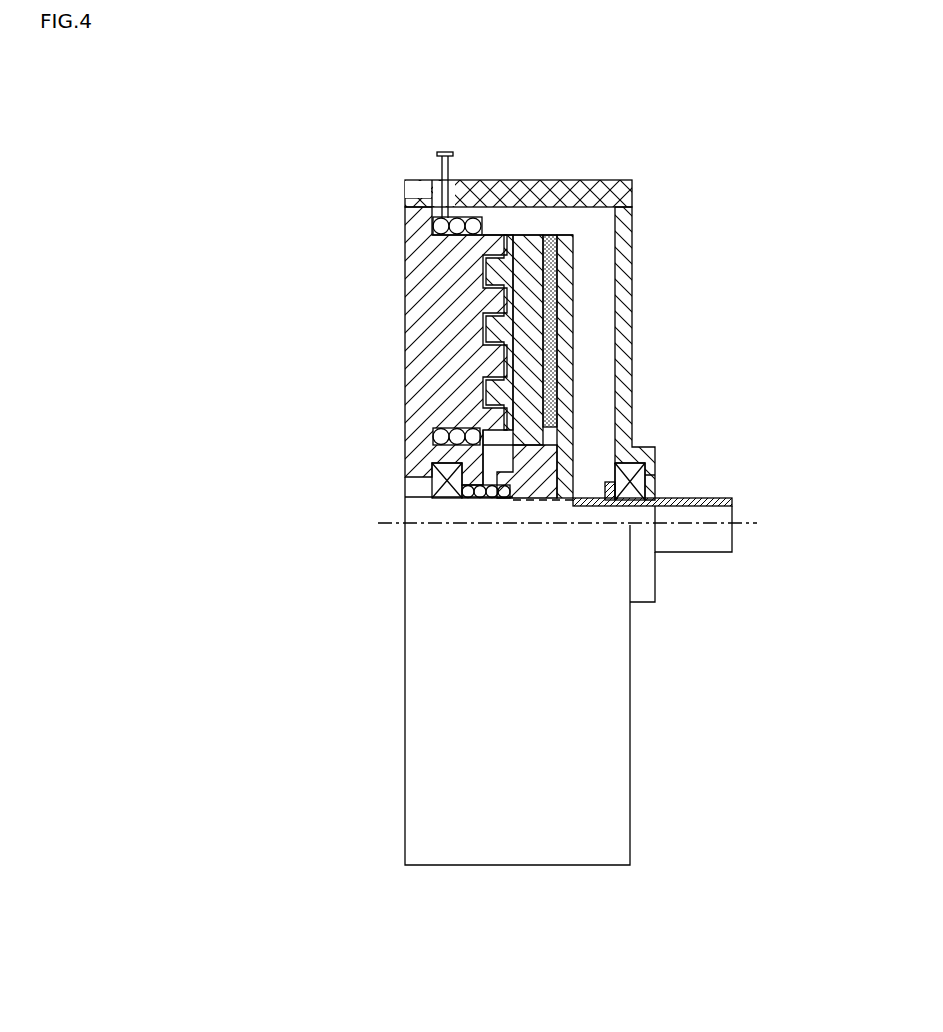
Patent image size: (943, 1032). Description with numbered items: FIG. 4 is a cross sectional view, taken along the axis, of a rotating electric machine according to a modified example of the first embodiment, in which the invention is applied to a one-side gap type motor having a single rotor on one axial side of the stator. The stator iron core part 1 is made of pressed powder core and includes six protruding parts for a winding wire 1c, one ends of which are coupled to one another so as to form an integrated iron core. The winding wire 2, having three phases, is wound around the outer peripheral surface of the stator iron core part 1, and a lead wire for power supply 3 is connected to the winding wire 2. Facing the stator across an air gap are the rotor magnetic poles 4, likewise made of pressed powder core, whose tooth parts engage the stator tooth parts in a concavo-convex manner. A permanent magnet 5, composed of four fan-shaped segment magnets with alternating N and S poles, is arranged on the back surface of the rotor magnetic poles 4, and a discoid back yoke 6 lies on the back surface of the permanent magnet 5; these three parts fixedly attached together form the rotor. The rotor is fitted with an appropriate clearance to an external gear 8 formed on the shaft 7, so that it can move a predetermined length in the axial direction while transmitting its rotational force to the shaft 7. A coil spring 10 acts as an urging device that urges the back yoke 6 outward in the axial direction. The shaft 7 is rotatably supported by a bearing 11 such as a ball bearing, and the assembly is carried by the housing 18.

The stator iron core part 1 is at (428, 280).
The protruding parts for a winding wire 1c is at (523, 240).
The winding wire 2 is at (468, 250).
The lead wire for power supply 3 is at (450, 163).
The rotor magnetic poles 4 is at (530, 248).
The permanent magnet 5 is at (552, 250).
The back yoke 6 is at (575, 243).
The shaft 7 is at (722, 498).
The external gear 8 is at (580, 497).
The coil spring 10 is at (484, 500).
The bearing 11 is at (432, 487).
The housing 18 is at (625, 218).